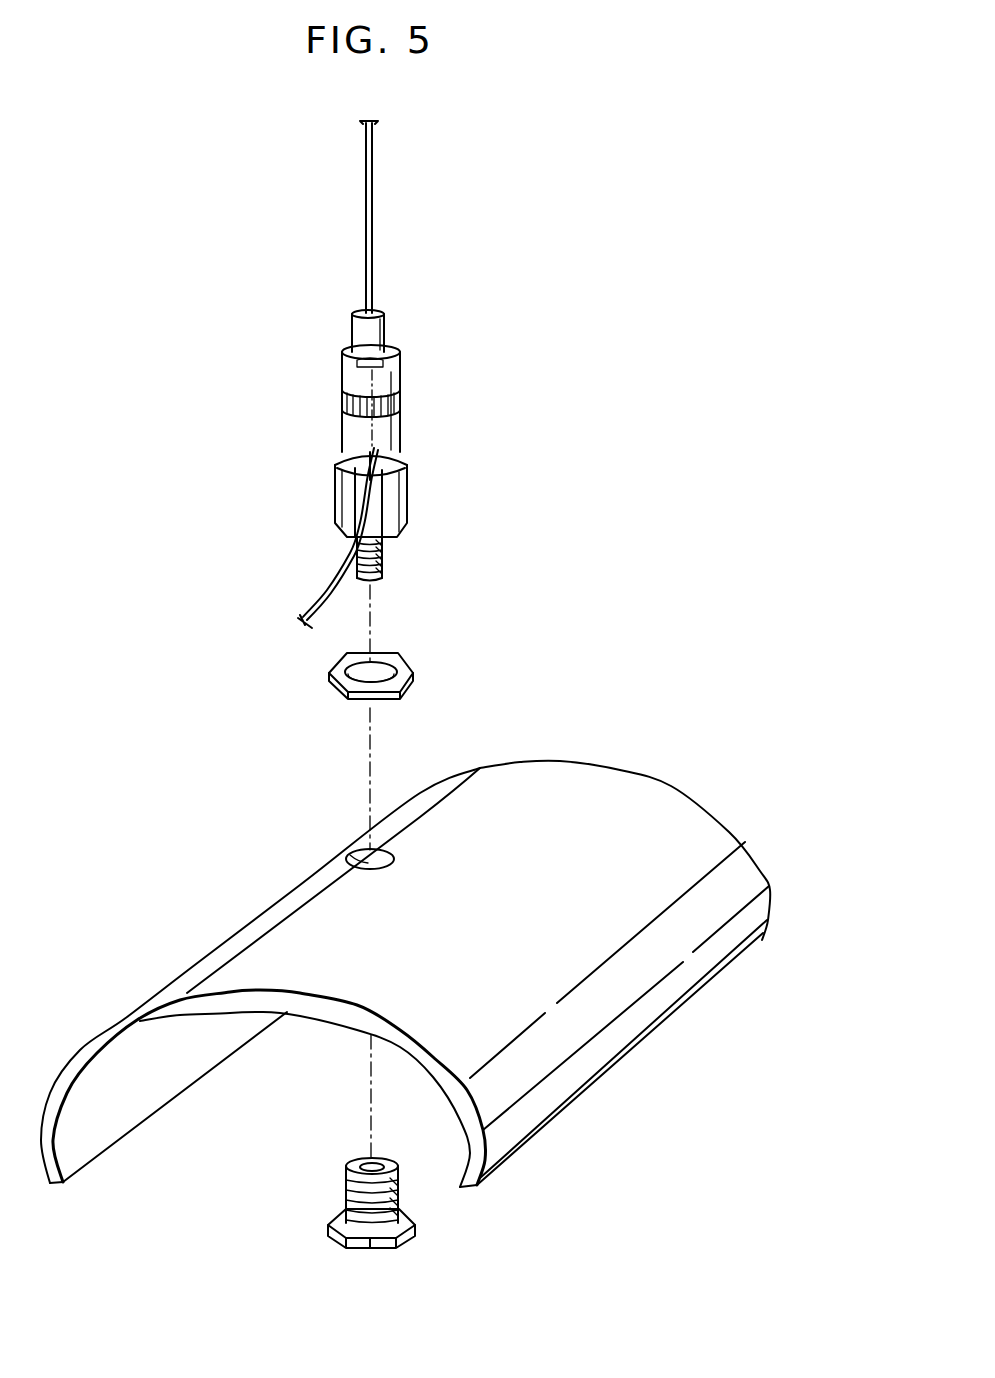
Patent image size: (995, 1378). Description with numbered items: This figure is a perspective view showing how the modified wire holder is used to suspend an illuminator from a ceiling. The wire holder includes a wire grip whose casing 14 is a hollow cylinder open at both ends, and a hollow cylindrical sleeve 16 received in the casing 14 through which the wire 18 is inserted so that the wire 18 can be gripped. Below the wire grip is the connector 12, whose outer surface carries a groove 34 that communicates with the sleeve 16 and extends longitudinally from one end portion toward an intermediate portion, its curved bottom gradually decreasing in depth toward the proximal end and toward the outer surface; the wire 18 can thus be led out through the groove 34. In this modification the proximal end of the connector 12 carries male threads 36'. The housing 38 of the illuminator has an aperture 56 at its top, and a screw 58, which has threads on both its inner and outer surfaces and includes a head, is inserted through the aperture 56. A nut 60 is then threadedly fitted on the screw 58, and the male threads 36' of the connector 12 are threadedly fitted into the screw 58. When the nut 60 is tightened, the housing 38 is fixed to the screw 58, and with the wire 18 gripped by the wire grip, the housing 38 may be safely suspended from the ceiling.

The connector 12 is at (403, 492).
The casing 14 is at (390, 378).
The sleeve 16 is at (387, 331).
The wire 18 is at (321, 603).
The groove 34 is at (368, 482).
The male threads 36' is at (414, 561).
The housing 38 is at (650, 797).
The aperture 56 is at (346, 858).
The screw 58 is at (347, 1199).
The nut 60 is at (330, 665).